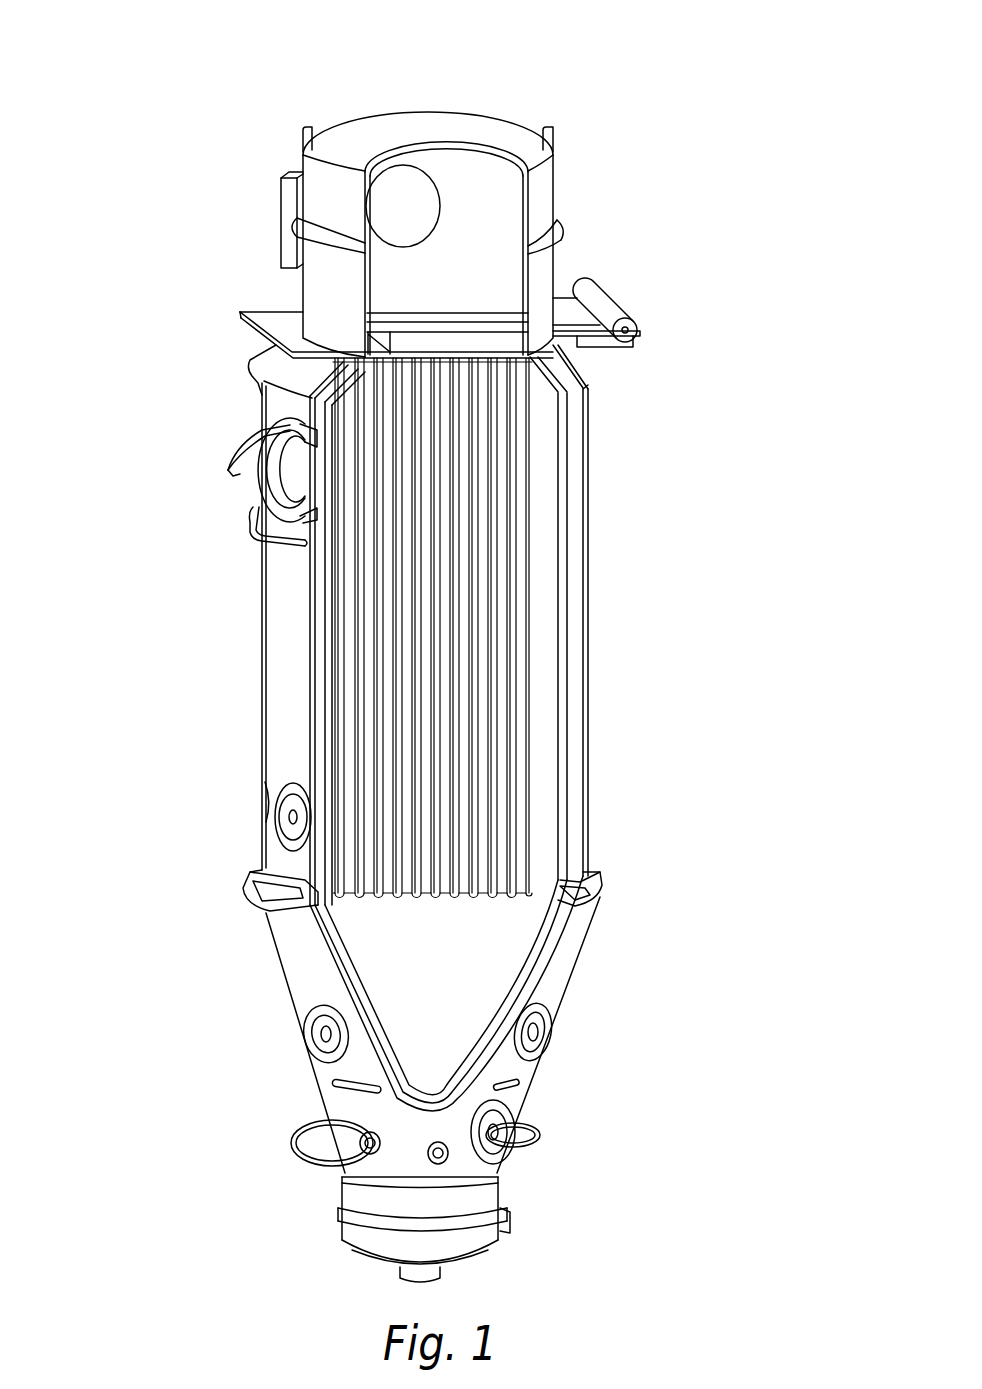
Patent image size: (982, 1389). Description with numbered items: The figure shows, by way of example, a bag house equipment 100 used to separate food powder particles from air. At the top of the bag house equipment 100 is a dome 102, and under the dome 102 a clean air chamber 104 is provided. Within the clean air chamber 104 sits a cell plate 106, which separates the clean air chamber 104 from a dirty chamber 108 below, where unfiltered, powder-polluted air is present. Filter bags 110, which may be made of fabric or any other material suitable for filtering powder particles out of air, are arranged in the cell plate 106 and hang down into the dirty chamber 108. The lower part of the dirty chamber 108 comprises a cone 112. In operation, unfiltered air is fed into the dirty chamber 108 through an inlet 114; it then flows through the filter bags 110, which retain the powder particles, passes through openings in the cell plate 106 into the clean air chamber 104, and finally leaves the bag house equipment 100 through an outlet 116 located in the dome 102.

The bag house equipment 100 is at (163, 306).
The dome 102 is at (553, 187).
The clean air chamber 104 is at (503, 260).
The cell plate 106 is at (470, 328).
The dirty chamber 108 is at (497, 945).
The filter bags 110 is at (462, 565).
The cone 112 is at (510, 1068).
The inlet 114 is at (293, 460).
The outlet 116 is at (403, 182).